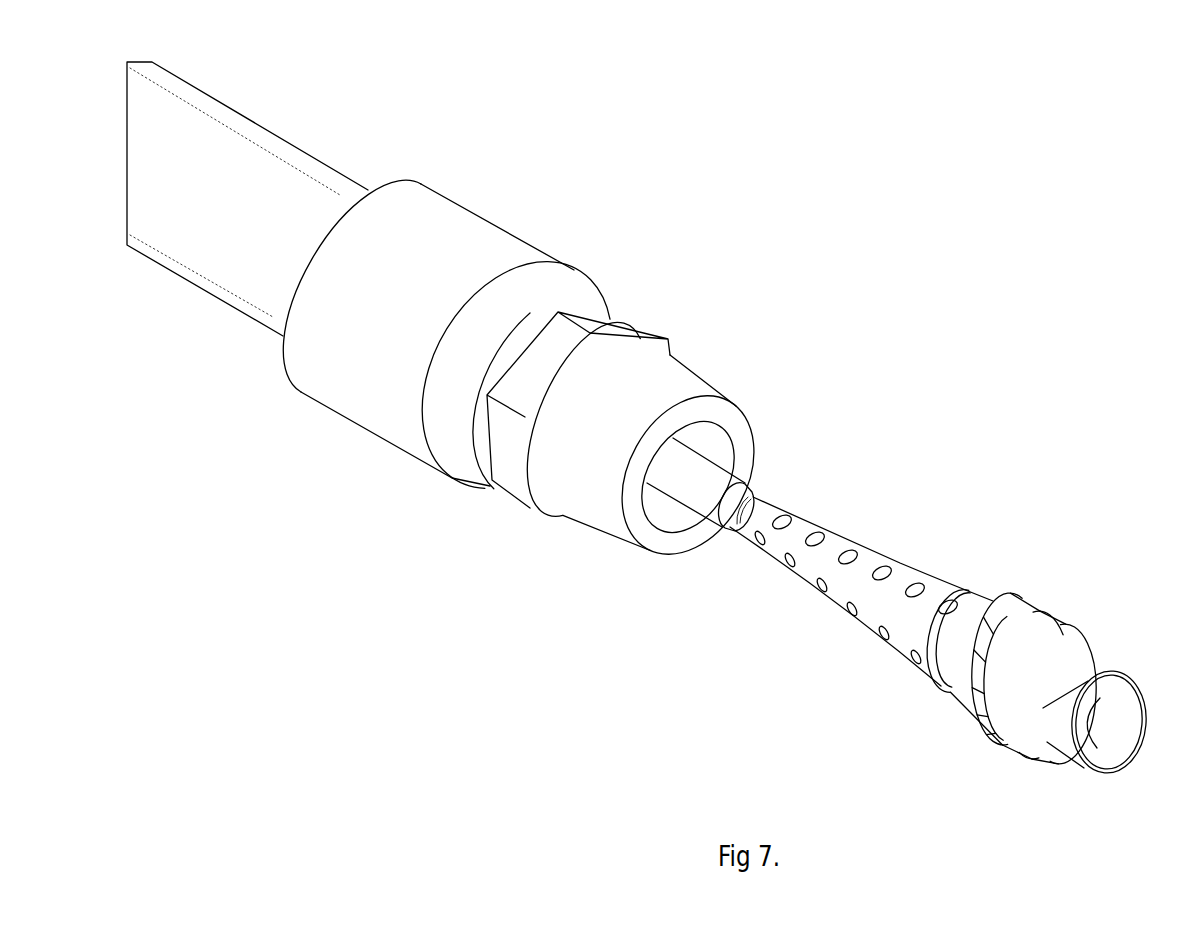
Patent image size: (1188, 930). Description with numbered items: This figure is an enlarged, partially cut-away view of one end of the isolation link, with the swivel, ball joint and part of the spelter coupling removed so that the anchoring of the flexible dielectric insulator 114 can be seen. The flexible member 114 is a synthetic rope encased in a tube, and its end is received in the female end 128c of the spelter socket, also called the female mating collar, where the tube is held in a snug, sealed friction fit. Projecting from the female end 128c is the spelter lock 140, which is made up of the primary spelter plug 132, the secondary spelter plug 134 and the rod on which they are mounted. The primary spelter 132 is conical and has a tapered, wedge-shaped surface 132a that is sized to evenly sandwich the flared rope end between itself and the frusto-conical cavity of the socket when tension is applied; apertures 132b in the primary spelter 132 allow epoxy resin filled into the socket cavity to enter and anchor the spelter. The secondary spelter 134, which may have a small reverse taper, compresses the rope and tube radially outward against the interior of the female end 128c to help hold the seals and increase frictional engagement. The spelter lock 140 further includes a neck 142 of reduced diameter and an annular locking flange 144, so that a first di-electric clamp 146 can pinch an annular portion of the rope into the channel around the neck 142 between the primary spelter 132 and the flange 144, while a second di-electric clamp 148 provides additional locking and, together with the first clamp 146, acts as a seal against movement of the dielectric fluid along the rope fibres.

The flexible dielectric insulator 114 is at (330, 120).
The female end of spelter socket 128c is at (710, 375).
The secondary spelter plug 134 is at (698, 473).
The spelter lock 140 is at (924, 583).
The primary spelter plug 132 is at (887, 571).
The tapered wedge-shaped surface 132a is at (880, 550).
The apertures 132b is at (876, 578).
The neck 142 is at (1035, 597).
The annular locking flange 144 is at (1068, 618).
The first di-electric clamp 146 is at (960, 707).
The second di-electric clamp 148 is at (1063, 755).